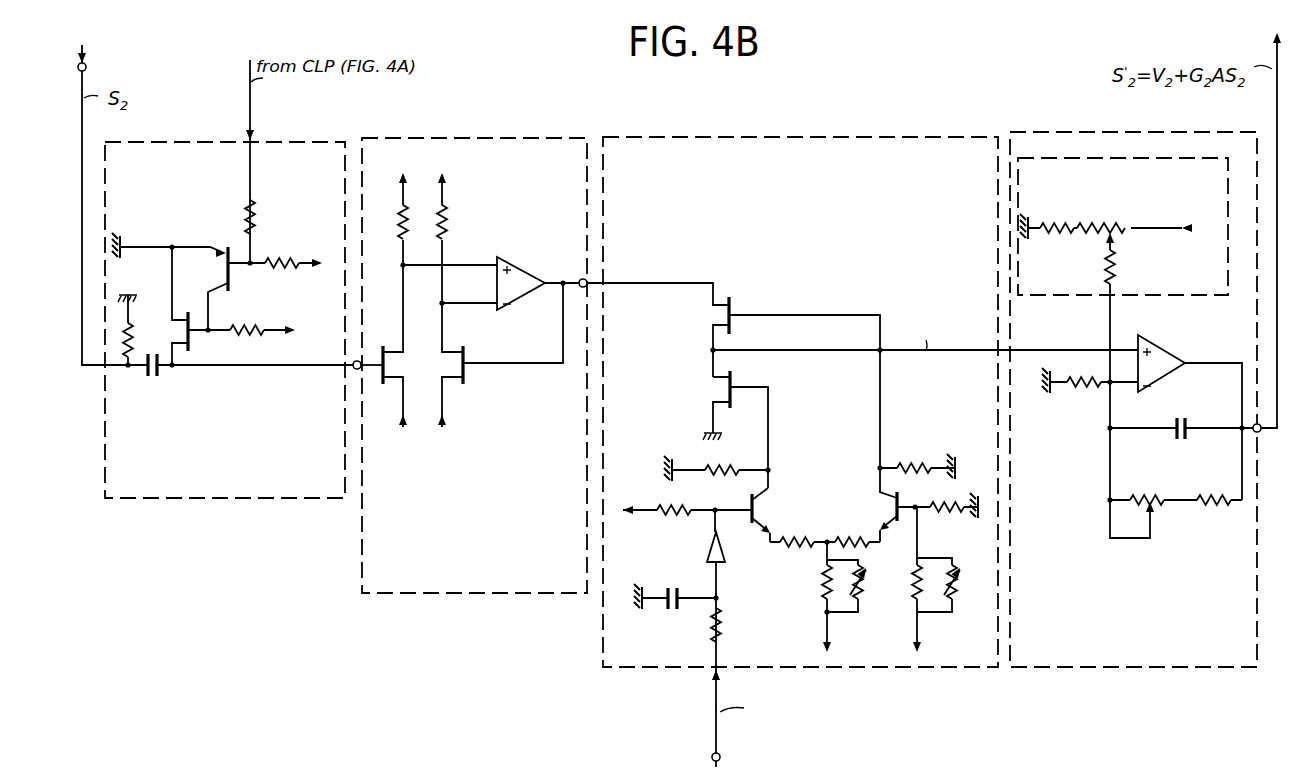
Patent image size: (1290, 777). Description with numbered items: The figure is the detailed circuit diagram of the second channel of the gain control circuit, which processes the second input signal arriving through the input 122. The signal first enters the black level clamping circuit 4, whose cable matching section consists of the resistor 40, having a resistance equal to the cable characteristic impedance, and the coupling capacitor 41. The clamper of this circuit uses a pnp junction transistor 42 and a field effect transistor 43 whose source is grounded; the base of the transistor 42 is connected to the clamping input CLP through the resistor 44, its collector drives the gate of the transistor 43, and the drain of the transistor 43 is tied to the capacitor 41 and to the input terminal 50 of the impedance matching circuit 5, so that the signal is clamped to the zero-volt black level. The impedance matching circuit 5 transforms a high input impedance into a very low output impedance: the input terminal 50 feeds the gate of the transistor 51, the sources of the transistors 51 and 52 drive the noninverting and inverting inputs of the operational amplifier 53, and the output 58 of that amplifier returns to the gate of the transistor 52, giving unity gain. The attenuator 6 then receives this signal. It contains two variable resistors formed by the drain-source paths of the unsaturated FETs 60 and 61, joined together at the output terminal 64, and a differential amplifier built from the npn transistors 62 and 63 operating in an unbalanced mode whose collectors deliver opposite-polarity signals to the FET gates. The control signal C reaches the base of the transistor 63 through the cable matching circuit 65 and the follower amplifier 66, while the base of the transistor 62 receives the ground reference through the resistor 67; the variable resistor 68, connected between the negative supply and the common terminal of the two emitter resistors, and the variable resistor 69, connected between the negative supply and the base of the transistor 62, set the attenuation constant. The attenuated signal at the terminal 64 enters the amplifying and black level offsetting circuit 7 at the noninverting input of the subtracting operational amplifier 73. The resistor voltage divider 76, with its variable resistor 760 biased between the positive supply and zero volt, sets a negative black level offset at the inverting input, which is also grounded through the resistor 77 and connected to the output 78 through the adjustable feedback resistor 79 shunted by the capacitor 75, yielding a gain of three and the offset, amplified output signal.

The input 122 is at (86, 67).
The black level clamping circuit 4 is at (228, 498).
The resistor 40 is at (139, 331).
The coupling capacitor 41 is at (152, 380).
The pnp junction transistor 42 is at (224, 267).
The field effect transistor 43 is at (192, 346).
The resistor 44 is at (253, 218).
The impedance matching circuit 5 is at (486, 592).
The input terminal 50 is at (360, 358).
The field effect transistor 51 is at (387, 362).
The field effect transistor 52 is at (458, 368).
The operational amplifier 53 is at (530, 262).
The output 58 is at (580, 277).
The attenuator 6 is at (650, 668).
The field effect transistor 60 is at (731, 300).
The field effect transistor 61 is at (734, 374).
The npn junction transistor 62 is at (892, 506).
The npn junction transistor 63 is at (768, 507).
The output terminal 64 is at (708, 350).
The cable matching circuit 65 is at (714, 621).
The follower amplifier 66 is at (722, 545).
The resistor 67 is at (962, 510).
The variable resistor 68 is at (860, 600).
The variable resistor 69 is at (955, 600).
The amplifying and black level offsetting circuit 7 is at (1145, 667).
The subtracting operational amplifier 73 is at (1163, 350).
The capacitor 75 is at (1190, 418).
The resistor voltage divider 76 is at (1058, 295).
The variable resistor 760 is at (1090, 238).
The resistor 77 is at (1090, 388).
The output 78 is at (1260, 433).
The adjustable feedback resistor 79 is at (1160, 490).